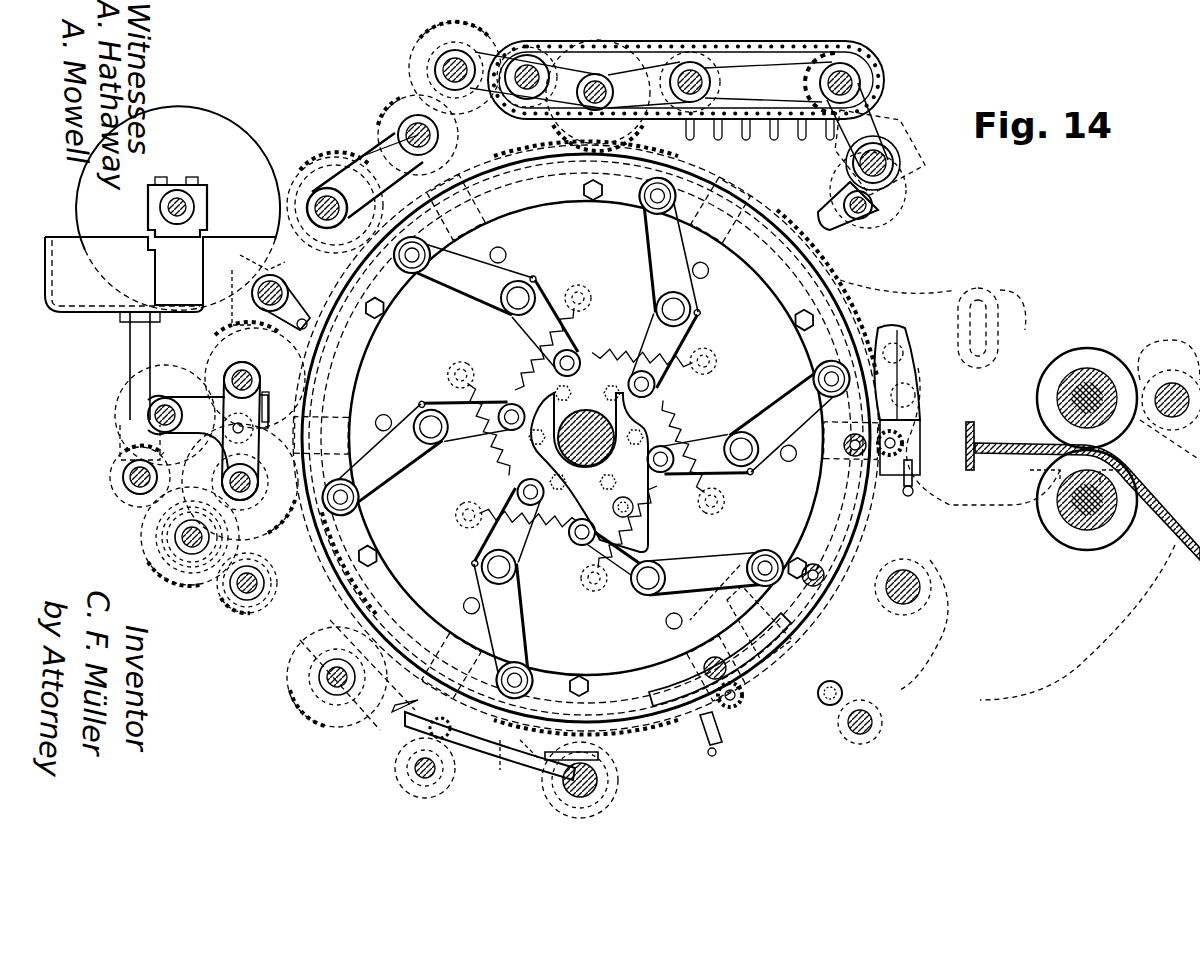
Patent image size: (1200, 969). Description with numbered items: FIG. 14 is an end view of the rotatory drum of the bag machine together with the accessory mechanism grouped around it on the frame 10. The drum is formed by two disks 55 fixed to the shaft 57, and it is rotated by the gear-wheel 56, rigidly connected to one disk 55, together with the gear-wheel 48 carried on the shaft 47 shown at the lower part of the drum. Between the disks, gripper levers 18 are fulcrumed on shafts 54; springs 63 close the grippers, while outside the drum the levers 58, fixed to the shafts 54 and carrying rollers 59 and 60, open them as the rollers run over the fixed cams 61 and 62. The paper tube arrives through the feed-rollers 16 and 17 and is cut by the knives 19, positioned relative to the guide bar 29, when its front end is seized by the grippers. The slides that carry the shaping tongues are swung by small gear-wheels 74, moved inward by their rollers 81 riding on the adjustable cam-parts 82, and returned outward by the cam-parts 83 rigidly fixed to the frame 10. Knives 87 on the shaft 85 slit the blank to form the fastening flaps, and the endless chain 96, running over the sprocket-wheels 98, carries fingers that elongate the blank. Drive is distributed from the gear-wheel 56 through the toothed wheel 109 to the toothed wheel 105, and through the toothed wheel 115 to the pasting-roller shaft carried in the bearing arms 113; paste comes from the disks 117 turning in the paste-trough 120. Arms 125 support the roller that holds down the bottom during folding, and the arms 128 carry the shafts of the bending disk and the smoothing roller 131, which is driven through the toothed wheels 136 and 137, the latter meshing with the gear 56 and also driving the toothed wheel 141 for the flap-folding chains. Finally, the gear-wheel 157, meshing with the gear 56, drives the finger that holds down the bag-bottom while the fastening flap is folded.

The frame 10 is at (1009, 512).
The feed-roller 16 is at (1087, 398).
The feed-roller 17 is at (1083, 500).
The lever 18 is at (586, 438).
The knife 19 is at (975, 437).
The guide bar 29 is at (1087, 492).
The shaft 47 is at (580, 780).
The gear-wheel 48 is at (550, 754).
The shaft 54 is at (586, 435).
The disk 55 is at (586, 438).
The gear-wheel 56 is at (586, 437).
The shaft 57 is at (586, 438).
The lever 58 is at (586, 437).
The roller 59 is at (586, 438).
The roller 60 is at (587, 448).
The fixed cam 61 is at (736, 586).
The fixed cam 62 is at (588, 469).
The spring 63 is at (586, 438).
The gear-wheel 74 is at (905, 444).
The roller 81 is at (810, 608).
The cam-part 82 is at (898, 397).
The cam-part 83 is at (483, 746).
The shaft 85 is at (888, 186).
The knife 87 is at (848, 209).
The endless chain 96 is at (686, 82).
The sprocket-wheel 98 is at (774, 109).
The toothed wheel 105 is at (549, 79).
The toothed wheel 109 is at (409, 125).
The bearing arm 113 is at (365, 180).
The toothed wheel 115 is at (335, 195).
The disk 117 is at (178, 208).
The paste-trough 120 is at (160, 328).
The arm 125 is at (276, 292).
The arm 128 is at (240, 451).
The smoothing roller 131 is at (255, 375).
The toothed wheel 136 is at (156, 436).
The toothed wheel 137 is at (248, 571).
The toothed wheel 141 is at (187, 539).
The gear-wheel 157 is at (366, 709).